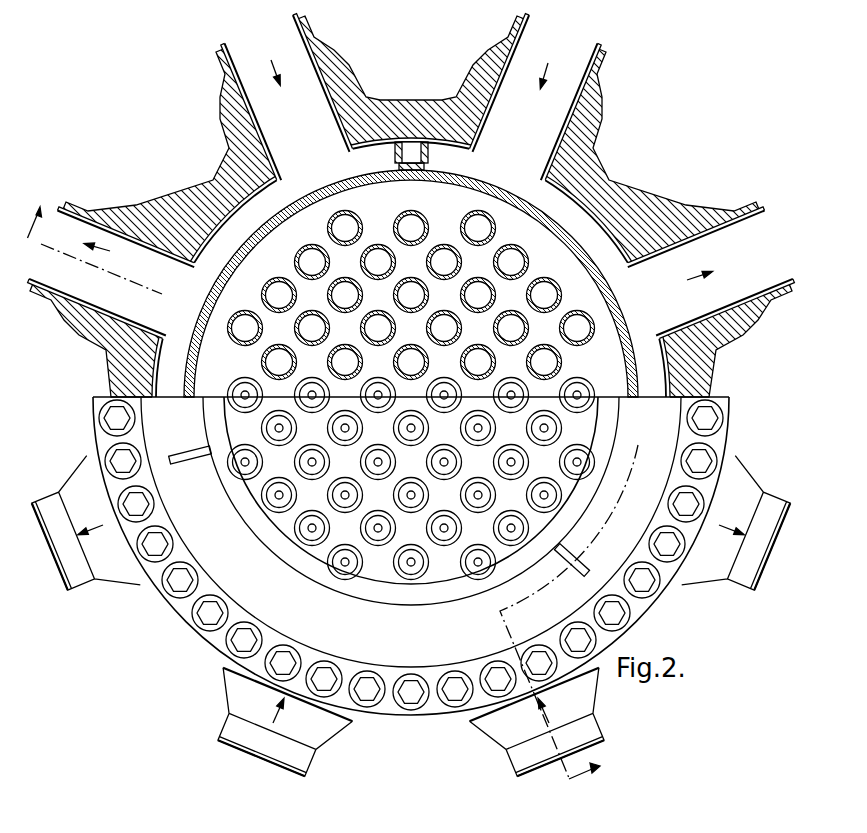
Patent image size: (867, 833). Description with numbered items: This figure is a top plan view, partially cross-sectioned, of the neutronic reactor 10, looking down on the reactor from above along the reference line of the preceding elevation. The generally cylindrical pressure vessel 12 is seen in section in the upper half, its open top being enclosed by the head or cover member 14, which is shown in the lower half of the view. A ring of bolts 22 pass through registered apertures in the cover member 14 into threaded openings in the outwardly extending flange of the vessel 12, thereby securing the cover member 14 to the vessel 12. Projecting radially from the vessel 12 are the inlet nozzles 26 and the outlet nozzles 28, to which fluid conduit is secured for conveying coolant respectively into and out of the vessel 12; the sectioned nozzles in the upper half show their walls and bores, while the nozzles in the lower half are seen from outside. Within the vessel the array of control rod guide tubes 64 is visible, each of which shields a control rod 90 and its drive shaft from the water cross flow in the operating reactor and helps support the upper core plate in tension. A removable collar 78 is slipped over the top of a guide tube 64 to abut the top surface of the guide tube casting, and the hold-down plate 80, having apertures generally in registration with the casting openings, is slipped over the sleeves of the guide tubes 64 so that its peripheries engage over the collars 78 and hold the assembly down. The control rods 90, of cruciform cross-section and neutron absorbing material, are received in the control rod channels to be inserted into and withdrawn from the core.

The neutronic reactor 10 is at (408, 399).
The pressure vessel 12 is at (417, 100).
The cover member 14 is at (411, 597).
The bolts 22 is at (647, 587).
The inlet nozzles 26 is at (581, 46).
The outlet nozzles 28 is at (760, 223).
The control rod guide tubes 64 is at (523, 268).
The removable collar 78 is at (520, 255).
The hold-down plate 80 is at (465, 198).
The control rods 90 is at (471, 485).